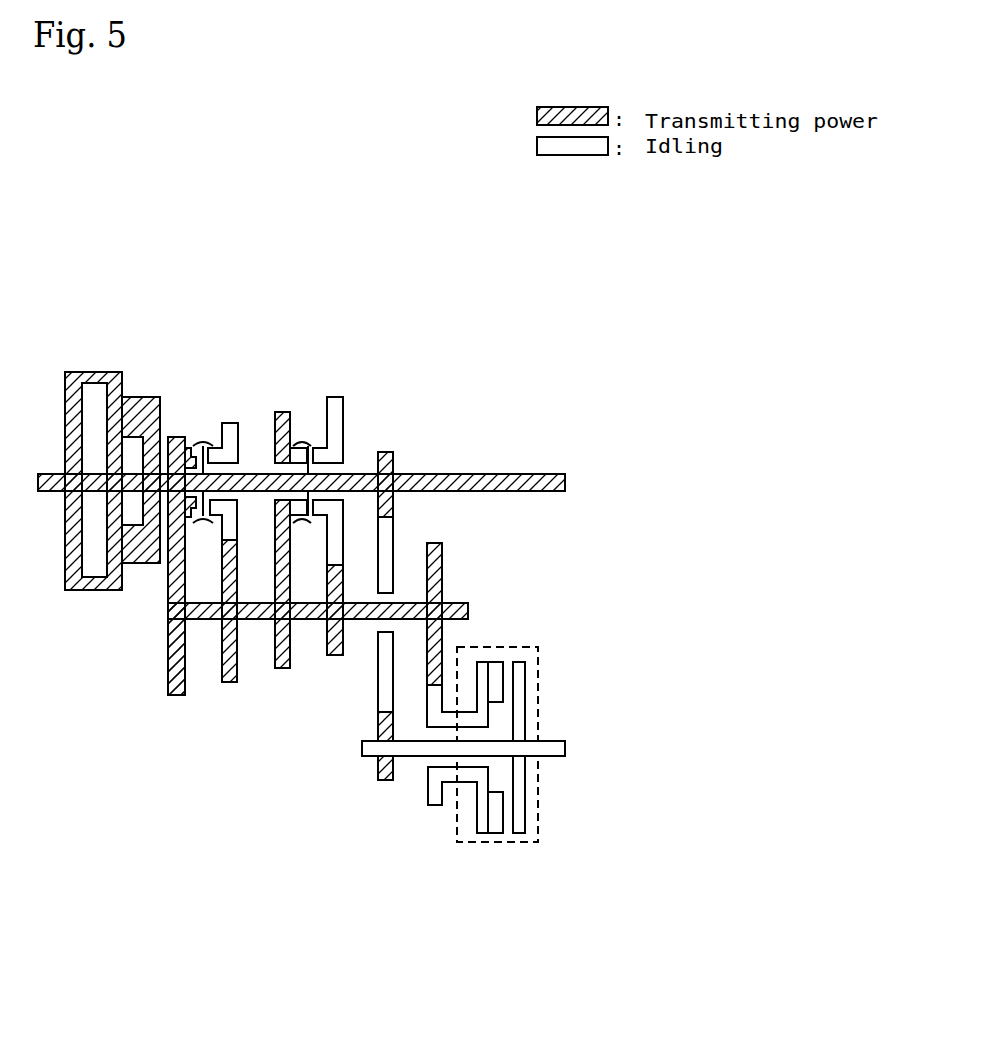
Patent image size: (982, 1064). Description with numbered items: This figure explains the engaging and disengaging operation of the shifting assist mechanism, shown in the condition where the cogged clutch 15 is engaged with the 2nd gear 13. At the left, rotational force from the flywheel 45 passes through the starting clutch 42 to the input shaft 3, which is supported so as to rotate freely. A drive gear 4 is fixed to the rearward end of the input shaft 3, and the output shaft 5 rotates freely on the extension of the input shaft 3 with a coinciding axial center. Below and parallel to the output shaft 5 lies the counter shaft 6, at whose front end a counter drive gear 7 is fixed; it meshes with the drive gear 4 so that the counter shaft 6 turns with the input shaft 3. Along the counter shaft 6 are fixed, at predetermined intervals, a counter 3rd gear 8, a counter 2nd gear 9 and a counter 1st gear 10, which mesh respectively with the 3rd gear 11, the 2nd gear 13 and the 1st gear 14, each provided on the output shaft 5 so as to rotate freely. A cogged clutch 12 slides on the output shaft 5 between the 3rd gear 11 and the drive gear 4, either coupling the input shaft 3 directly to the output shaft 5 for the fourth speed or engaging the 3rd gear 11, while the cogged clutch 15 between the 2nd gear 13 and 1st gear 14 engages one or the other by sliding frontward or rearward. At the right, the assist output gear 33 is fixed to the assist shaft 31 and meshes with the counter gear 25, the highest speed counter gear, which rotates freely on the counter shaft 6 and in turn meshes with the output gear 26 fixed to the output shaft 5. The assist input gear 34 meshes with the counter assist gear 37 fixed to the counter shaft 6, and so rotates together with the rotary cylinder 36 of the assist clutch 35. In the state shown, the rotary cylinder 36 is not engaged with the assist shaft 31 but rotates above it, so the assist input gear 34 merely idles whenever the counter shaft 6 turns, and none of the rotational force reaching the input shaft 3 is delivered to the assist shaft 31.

The flywheel 45 is at (92, 370).
The starting clutch 42 is at (133, 397).
The input shaft 3 is at (157, 435).
The drive gear 4 is at (173, 435).
The cogged clutch 12 is at (202, 438).
The 3rd gear 11 is at (235, 422).
The 2nd gear 13 is at (281, 411).
The cogged clutch 15 is at (301, 438).
The 1st gear 14 is at (336, 397).
The output gear 26 is at (386, 452).
The output shaft 5 is at (488, 474).
The counter assist gear 37 is at (442, 560).
The counter shaft 6 is at (468, 609).
The counter drive gear 7 is at (175, 695).
The counter 3rd gear 8 is at (230, 682).
The counter 2nd gear 9 is at (282, 668).
The counter 1st gear 10 is at (334, 655).
The counter gear 25 is at (378, 700).
The assist output gear 33 is at (385, 780).
The assist input gear 34 is at (430, 806).
The rotary cylinder 36 is at (448, 783).
The assist clutch 35 is at (538, 647).
The assist shaft 31 is at (565, 746).